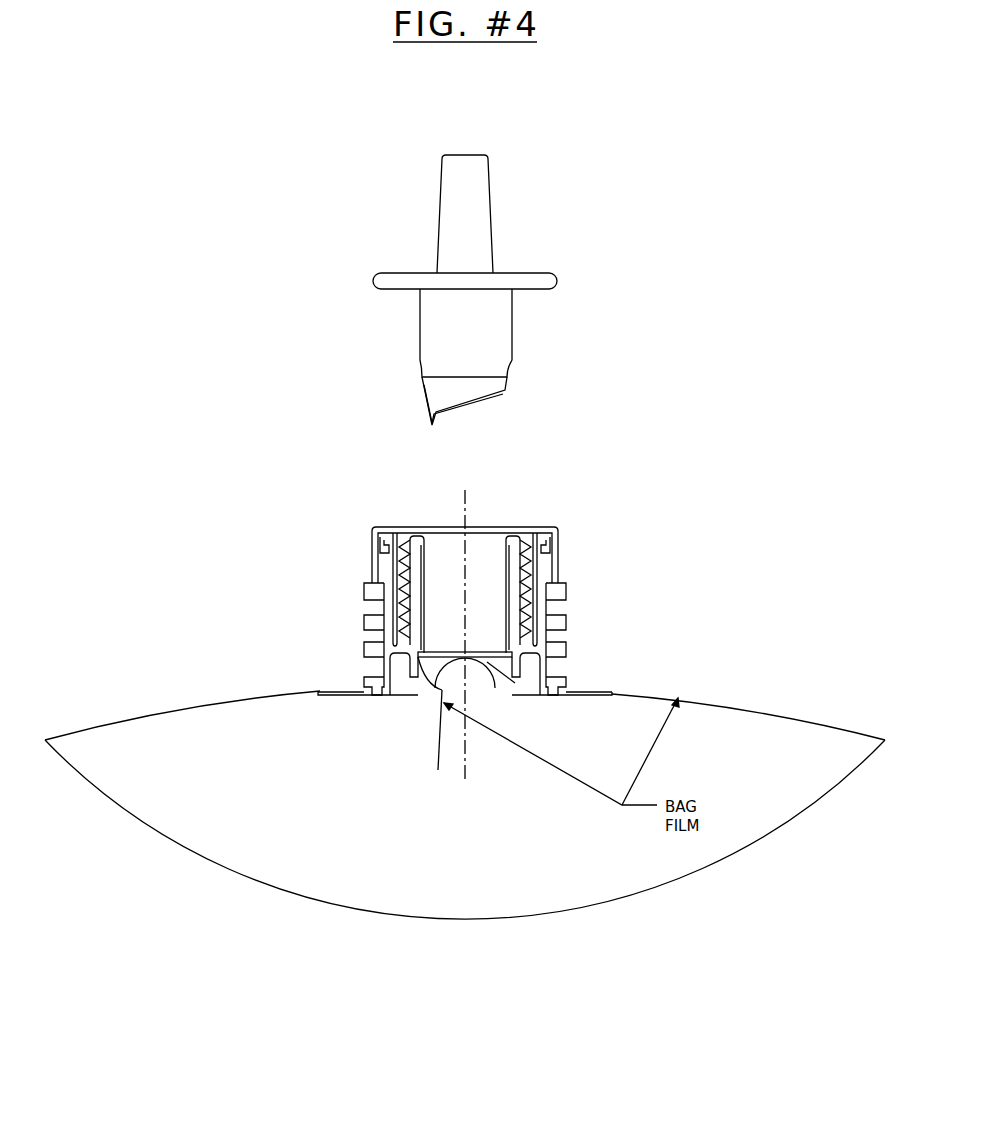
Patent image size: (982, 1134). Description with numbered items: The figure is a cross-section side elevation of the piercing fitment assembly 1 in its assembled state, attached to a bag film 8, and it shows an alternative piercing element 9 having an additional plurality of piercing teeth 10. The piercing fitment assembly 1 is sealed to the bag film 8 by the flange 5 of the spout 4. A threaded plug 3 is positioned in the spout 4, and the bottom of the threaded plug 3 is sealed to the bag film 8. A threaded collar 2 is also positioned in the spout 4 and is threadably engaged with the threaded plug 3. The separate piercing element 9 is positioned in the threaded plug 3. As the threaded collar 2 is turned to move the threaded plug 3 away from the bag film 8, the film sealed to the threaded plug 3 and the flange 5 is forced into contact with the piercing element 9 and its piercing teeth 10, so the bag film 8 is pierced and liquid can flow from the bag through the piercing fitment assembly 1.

The piercing fitment assembly 1 is at (388, 517).
The threaded collar 2 is at (565, 555).
The threaded plug 3 is at (513, 595).
The spout 4 is at (365, 610).
The flange 5 is at (587, 690).
The bag film 8 is at (237, 692).
The piercing element 9 is at (508, 205).
The piercing teeth 10 is at (417, 423).